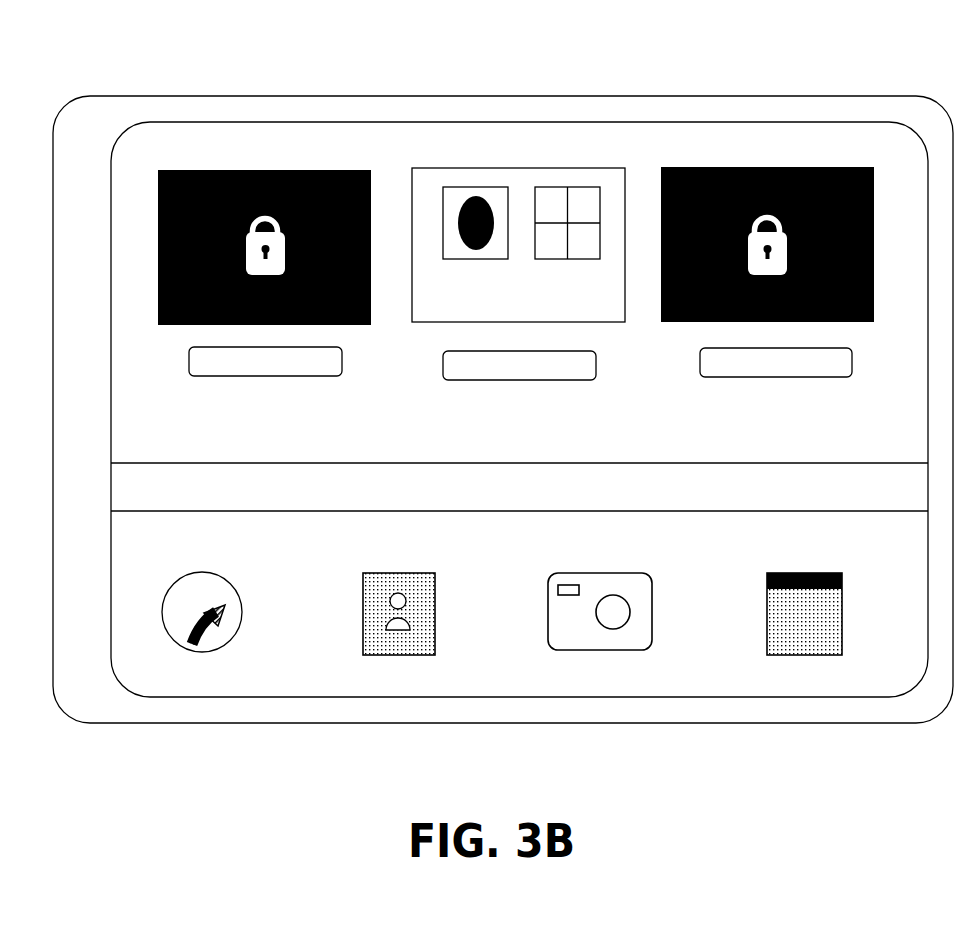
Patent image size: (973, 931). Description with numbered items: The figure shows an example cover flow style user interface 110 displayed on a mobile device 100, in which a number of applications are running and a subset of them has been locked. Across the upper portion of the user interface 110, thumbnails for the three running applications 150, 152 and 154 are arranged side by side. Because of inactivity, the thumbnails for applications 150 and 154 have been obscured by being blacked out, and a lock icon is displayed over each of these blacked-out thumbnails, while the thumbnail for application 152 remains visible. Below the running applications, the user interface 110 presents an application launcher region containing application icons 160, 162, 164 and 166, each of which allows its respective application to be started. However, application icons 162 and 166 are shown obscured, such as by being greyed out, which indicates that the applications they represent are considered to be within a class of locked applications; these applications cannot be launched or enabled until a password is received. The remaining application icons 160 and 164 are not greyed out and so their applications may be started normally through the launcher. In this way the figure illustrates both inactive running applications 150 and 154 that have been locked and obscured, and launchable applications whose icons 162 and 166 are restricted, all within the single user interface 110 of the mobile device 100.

The mobile device 100 is at (123, 723).
The user interface 110 is at (200, 130).
The application 150 is at (327, 171).
The application 152 is at (563, 183).
The application 154 is at (822, 165).
The application icon 160 is at (203, 687).
The application icon 162 is at (393, 687).
The application icon 164 is at (600, 687).
The application icon 166 is at (828, 687).